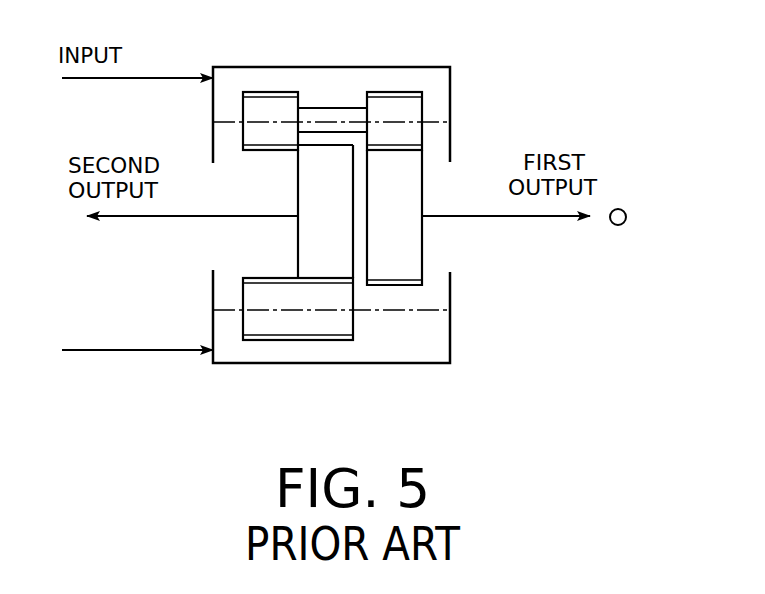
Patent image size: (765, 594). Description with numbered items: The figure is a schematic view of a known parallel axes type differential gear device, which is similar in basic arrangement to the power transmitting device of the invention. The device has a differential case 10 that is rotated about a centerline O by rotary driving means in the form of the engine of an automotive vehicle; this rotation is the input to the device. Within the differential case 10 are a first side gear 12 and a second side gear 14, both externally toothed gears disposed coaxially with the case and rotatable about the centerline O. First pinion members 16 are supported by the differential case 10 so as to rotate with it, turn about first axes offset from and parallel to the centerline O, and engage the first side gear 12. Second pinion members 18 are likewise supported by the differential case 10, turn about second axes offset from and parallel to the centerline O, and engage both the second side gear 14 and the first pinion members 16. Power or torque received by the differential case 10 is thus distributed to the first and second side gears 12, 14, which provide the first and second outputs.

The differential case 10 is at (238, 67).
The first side gear 12 is at (388, 265).
The second side gear 14 is at (315, 177).
The first pinion members 16 is at (333, 113).
The second pinion members 18 is at (298, 316).